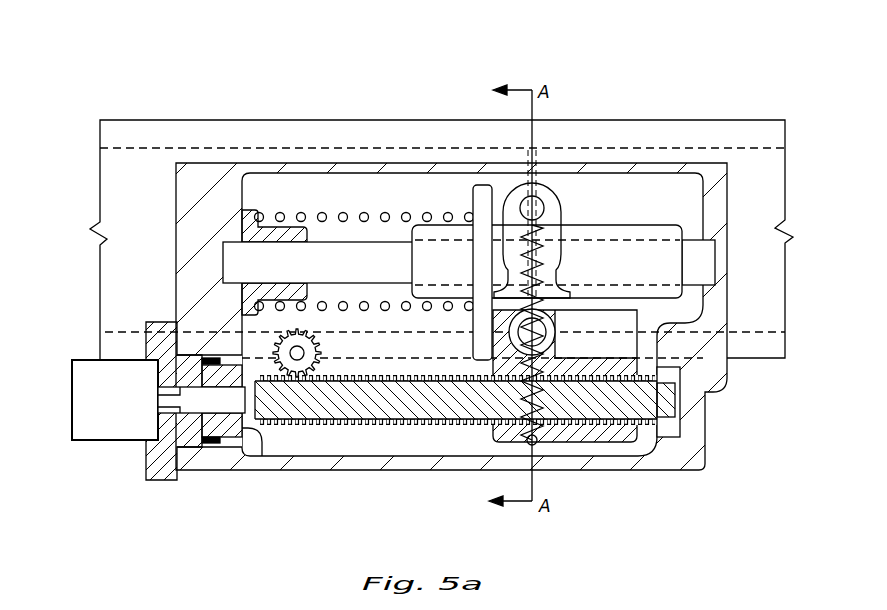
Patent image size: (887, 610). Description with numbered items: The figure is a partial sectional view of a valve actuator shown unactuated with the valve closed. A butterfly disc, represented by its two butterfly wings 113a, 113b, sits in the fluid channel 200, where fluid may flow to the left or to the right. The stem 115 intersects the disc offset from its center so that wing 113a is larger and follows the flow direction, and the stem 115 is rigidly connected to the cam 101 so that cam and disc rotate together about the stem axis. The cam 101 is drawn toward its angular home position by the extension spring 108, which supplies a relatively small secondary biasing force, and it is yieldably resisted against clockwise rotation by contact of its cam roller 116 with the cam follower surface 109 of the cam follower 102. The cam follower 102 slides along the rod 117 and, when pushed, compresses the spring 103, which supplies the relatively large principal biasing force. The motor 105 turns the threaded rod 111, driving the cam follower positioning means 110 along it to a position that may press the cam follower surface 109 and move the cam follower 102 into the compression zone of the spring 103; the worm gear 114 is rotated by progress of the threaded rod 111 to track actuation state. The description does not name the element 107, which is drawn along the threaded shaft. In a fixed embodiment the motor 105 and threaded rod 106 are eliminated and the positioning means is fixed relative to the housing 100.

The housing 100 is at (216, 165).
The cam 101 is at (576, 167).
The cam follower 102 is at (482, 197).
The spring 103 is at (425, 215).
The motor 105 is at (113, 440).
The threaded rod 106 is at (298, 422).
The rack shaft 107 is at (378, 425).
The extension spring 108 is at (538, 440).
The cam follower surface 109 is at (556, 428).
The cam follower positioning means 110 is at (625, 442).
The threaded rod 111 is at (675, 400).
The butterfly wing 113a is at (556, 255).
The butterfly wing 113b is at (523, 150).
The worm gear 114 is at (278, 348).
The stem 115 is at (538, 218).
The cam roller 116 is at (555, 346).
The rod 117 is at (690, 240).
The fluid channel 200 is at (668, 148).